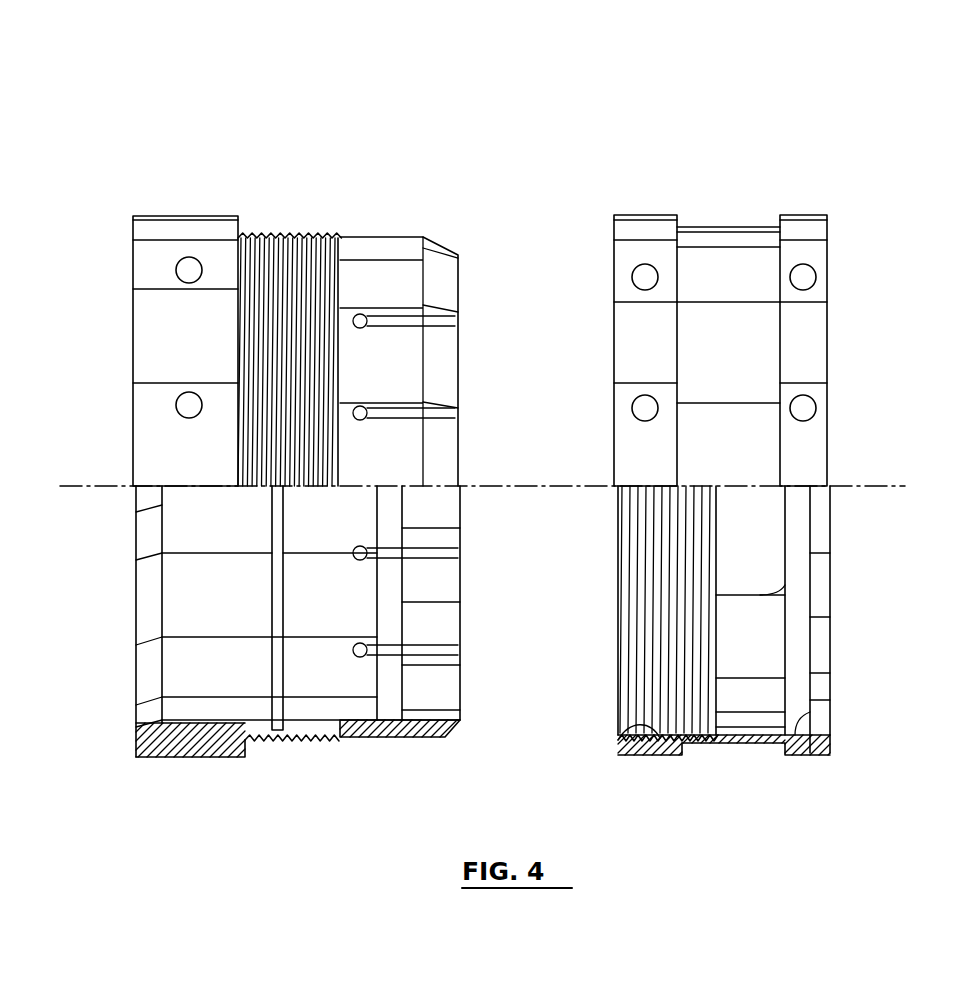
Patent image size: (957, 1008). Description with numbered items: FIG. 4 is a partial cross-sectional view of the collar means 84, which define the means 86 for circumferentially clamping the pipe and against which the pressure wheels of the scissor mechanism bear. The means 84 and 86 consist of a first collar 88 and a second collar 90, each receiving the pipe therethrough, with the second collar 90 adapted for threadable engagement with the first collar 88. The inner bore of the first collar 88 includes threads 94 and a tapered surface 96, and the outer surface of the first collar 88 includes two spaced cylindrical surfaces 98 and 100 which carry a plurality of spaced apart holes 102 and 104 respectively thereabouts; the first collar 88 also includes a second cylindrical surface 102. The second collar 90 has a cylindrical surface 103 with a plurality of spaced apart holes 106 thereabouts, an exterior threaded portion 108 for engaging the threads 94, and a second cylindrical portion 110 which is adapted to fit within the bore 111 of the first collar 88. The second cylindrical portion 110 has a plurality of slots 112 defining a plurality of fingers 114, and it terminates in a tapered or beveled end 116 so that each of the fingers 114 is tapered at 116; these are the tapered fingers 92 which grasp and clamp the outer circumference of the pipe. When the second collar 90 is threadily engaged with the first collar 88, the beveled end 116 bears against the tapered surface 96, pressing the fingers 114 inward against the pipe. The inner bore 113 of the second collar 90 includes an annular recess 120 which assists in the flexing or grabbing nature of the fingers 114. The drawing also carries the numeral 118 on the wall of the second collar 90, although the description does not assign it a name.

The collar means 84 is at (486, 132).
The means for circumferentially clamping the pipe 86 is at (398, 152).
The first collar 88 is at (815, 235).
The second collar 90 is at (238, 230).
The tapered fingers 92 is at (440, 597).
The threads 94 is at (620, 738).
The tapered surface 96 is at (805, 703).
The cylindrical surface 98 is at (636, 218).
The cylindrical surface 100 is at (790, 215).
The holes 102 is at (703, 235).
The cylindrical surface 103 is at (145, 352).
The holes 104 is at (808, 278).
The holes 106 is at (190, 265).
The exterior threaded portion 108 is at (290, 233).
The second cylindrical portion 110 is at (448, 683).
The bore 111 is at (823, 580).
The slots 112 is at (458, 318).
The inner bore 113 is at (180, 513).
The fingers 114 is at (405, 274).
The tapered or beveled end 116 is at (440, 250).
The wall 118 is at (182, 684).
The annular recess 120 is at (275, 568).